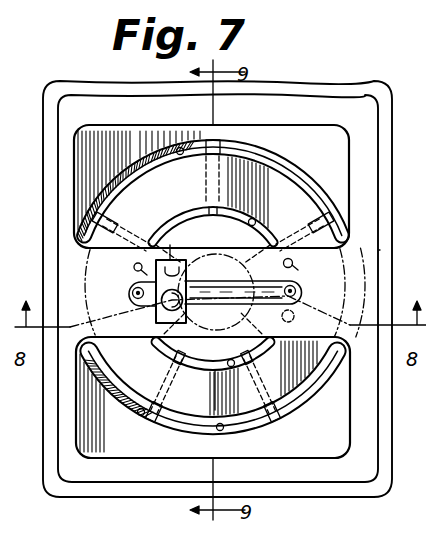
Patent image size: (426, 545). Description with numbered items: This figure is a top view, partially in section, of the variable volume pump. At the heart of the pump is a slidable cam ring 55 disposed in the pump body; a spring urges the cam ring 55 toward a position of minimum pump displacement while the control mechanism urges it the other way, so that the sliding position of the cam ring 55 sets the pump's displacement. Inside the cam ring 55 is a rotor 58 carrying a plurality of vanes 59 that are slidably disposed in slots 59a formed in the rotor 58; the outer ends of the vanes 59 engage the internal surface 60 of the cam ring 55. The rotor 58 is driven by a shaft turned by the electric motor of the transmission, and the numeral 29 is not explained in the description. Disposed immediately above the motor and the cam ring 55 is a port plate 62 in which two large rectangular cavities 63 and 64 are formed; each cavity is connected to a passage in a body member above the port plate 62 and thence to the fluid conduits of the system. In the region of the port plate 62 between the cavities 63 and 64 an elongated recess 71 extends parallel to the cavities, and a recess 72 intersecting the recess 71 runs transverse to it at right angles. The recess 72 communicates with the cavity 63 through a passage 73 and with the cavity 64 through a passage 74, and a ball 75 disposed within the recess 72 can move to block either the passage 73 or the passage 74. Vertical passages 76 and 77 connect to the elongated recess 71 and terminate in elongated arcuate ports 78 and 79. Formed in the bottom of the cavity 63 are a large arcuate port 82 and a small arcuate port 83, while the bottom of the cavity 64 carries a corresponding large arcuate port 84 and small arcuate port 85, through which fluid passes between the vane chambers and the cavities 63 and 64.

The shaft 29 is at (402, 255).
The cam ring 55 is at (386, 160).
The rotor 58 is at (266, 174).
The vanes 59 is at (318, 196).
The slots 59a is at (204, 183).
The internal surface 60 is at (212, 441).
The port plate 62 is at (375, 410).
The cavity 63 is at (327, 443).
The cavity 64 is at (135, 159).
The elongated recess 71 is at (272, 305).
The recess 72 is at (188, 270).
The passage 73 is at (192, 313).
The passage 74 is at (195, 236).
The ball 75 is at (160, 343).
The vertical passage 76 is at (299, 292).
The vertical passage 77 is at (132, 293).
The elongated arcuate port 78 is at (133, 267).
The elongated arcuate port 79 is at (294, 263).
The large arcuate port 82 is at (140, 416).
The small arcuate port 83 is at (232, 367).
The large arcuate port 84 is at (180, 147).
The small arcuate port 85 is at (254, 219).